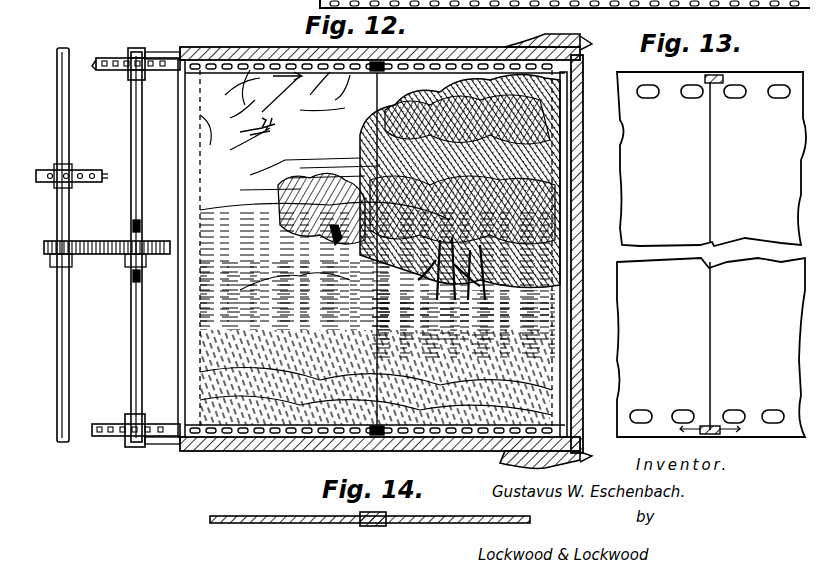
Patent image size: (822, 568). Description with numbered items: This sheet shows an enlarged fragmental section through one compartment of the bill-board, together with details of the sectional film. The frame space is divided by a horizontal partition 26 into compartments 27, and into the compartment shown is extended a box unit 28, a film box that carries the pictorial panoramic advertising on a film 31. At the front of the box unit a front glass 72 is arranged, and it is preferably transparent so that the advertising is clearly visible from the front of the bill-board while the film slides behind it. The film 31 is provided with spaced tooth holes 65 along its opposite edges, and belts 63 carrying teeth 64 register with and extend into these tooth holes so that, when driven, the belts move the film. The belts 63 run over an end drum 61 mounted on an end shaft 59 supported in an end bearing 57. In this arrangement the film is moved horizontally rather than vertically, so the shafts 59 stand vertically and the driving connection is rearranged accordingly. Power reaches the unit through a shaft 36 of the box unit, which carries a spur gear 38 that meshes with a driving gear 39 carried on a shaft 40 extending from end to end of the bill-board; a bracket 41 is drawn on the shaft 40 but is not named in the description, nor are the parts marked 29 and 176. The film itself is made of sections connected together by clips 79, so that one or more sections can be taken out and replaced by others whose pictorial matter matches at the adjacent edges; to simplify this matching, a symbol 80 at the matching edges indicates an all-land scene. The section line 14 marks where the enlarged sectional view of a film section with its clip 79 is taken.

In FIG. 13, the section line 14 is at (713, 442).
In FIG. 12, the horizontal partition 26 is at (600, 6).
In FIG. 12, the compartment 27 is at (548, 40).
In FIG. 12, the box unit 28 is at (244, 47).
In FIG. 12, the frame corner 29 is at (590, 46).
In FIG. 12, the film 31 is at (182, 104).
In FIG. 13, the film 31 is at (765, 80).
In FIG. 14, the film 31 is at (298, 516).
In FIG. 12, the shaft 36 is at (141, 228).
In FIG. 12, the spur gear 38 is at (160, 254).
In FIG. 12, the driving gear 39 is at (94, 254).
In FIG. 12, the shaft 40 is at (69, 128).
In FIG. 12, the bracket arm 41 is at (88, 182).
In FIG. 12, the end bearing 57 is at (160, 52).
In FIG. 12, the end shaft 59 is at (142, 170).
In FIG. 12, the end drum 61 is at (123, 72).
In FIG. 12, the belt 63 is at (110, 58).
In FIG. 12, the tooth 64 is at (96, 66).
In FIG. 12, the tooth hole 65 is at (238, 70).
In FIG. 13, the tooth hole 65 is at (690, 98).
In FIG. 12, the front glass guide 72 is at (583, 183).
In FIG. 12, the clip 79 is at (372, 68).
In FIG. 13, the clip 79 is at (716, 75).
In FIG. 14, the clip 79 is at (372, 527).
In FIG. 12, the symbol 80 is at (447, 8).
In FIG. 12, the airplane 176 is at (264, 136).